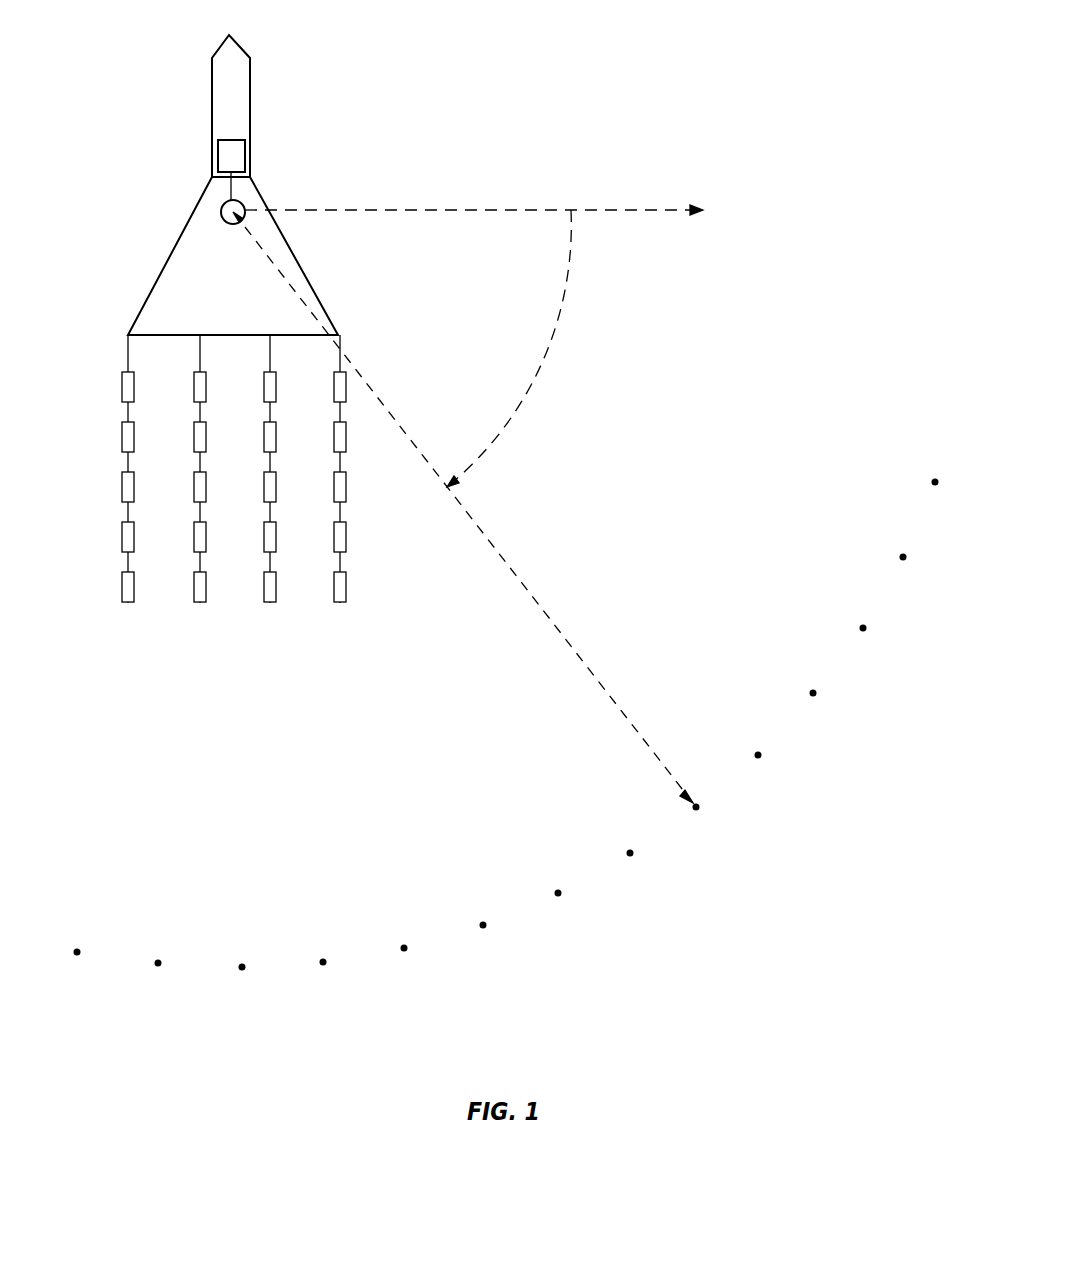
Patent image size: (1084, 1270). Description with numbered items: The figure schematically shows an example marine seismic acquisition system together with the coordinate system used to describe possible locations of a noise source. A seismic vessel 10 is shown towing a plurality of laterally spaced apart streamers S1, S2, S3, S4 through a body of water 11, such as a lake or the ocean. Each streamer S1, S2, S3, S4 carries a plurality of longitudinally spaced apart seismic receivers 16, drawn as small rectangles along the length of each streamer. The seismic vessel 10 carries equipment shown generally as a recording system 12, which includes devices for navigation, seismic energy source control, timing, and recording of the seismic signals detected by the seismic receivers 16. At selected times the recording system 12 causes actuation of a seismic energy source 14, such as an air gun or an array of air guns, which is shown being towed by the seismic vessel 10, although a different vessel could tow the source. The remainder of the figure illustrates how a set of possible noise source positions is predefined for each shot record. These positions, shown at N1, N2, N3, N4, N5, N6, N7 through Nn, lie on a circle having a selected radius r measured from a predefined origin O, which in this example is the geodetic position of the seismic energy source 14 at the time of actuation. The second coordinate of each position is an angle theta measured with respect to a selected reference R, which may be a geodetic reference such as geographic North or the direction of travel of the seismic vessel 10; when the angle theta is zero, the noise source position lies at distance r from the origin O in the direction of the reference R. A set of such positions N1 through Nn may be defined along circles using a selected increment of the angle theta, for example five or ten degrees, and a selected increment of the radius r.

The seismic vessel 10 is at (218, 103).
The body of water 11 is at (492, 151).
The recording system 12 is at (237, 155).
The seismic energy source 14 is at (243, 204).
The seismic receivers 16 is at (122, 390).
The predefined origin O is at (224, 208).
The selected reference R is at (485, 210).
The reference angle theta is at (512, 348).
The radius r is at (469, 515).
The streamer S1 is at (128, 603).
The streamer S2 is at (200, 603).
The streamer S3 is at (270, 603).
The streamer S4 is at (340, 603).
The possible noise source position N1 is at (753, 826).
The possible noise source position N2 is at (647, 874).
The possible noise source position N3 is at (574, 915).
The possible noise source position N4 is at (496, 948).
The possible noise source position N5 is at (411, 971).
The possible noise source position N6 is at (329, 984).
The possible noise source position N7 is at (243, 988).
The possible noise source position Nn is at (779, 764).